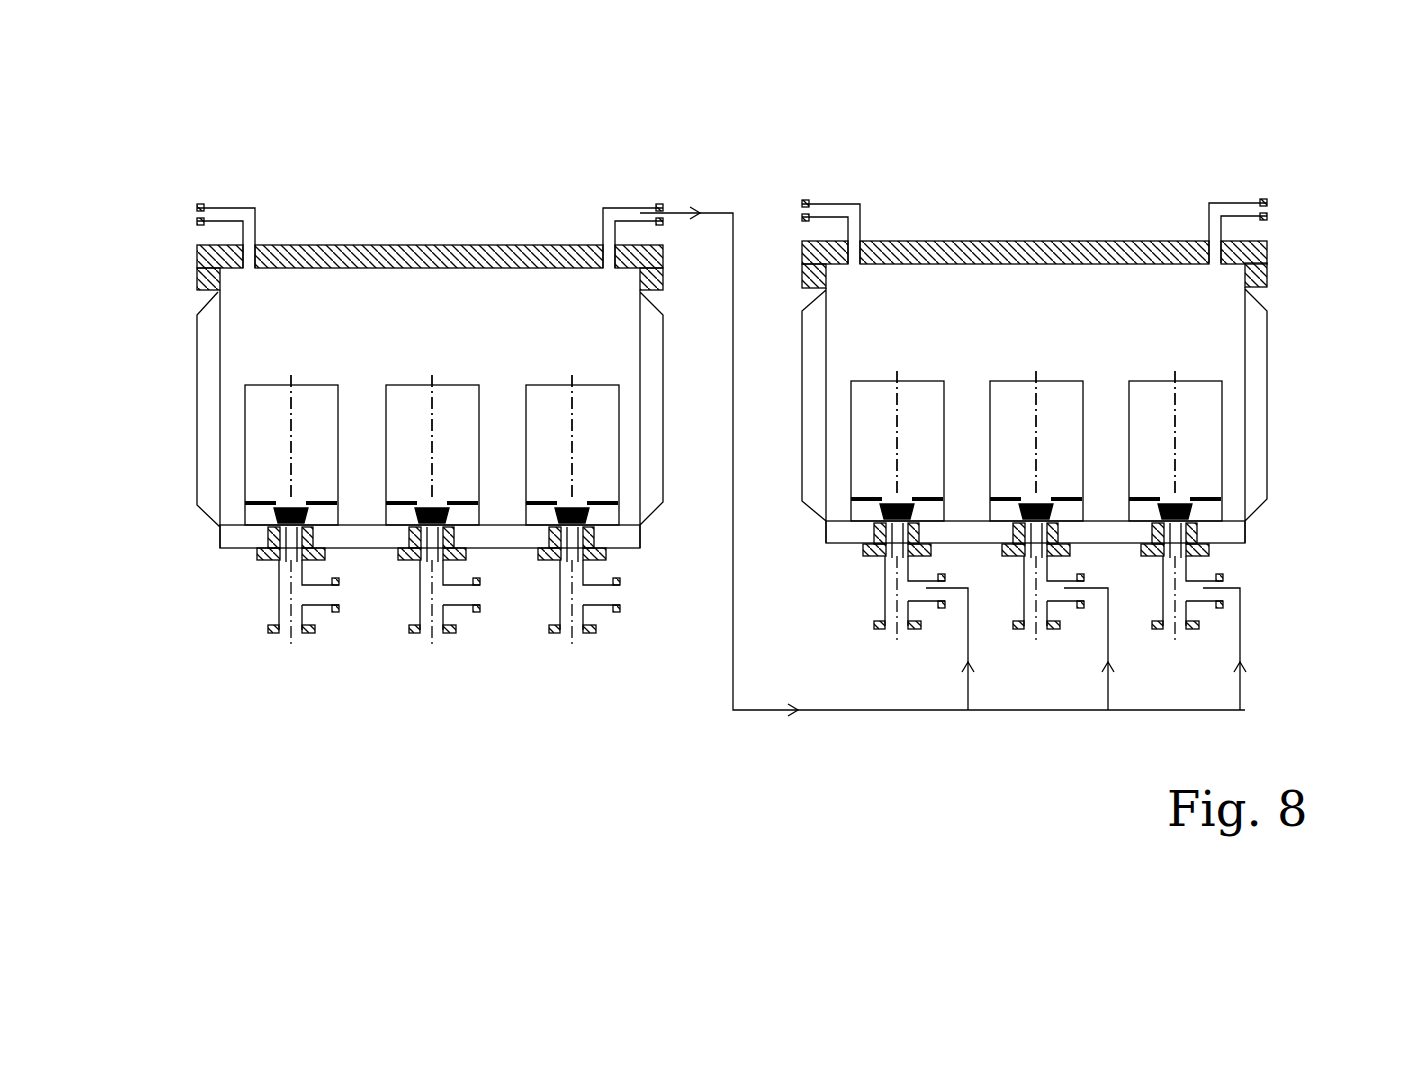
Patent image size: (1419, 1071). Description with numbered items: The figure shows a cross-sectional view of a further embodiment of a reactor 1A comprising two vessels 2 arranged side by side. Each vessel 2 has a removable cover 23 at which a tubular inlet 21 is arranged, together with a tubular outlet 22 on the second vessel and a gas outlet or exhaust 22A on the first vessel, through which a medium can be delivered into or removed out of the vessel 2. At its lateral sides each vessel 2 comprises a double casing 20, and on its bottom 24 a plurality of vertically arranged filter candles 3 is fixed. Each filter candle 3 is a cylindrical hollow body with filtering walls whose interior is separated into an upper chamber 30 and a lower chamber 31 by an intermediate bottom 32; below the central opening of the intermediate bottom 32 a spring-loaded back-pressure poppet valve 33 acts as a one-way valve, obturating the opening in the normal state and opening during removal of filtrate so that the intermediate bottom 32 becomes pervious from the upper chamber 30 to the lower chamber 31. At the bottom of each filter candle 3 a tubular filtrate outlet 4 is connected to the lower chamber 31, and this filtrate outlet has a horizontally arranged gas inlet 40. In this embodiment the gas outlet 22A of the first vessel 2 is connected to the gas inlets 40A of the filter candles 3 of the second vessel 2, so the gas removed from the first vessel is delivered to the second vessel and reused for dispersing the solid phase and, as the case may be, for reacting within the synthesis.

The reactor 1A is at (167, 250).
The vessel 2 is at (683, 419).
The filter candle 3 is at (238, 417).
The filtrate outlet 4 is at (878, 590).
The double casing 20 is at (210, 463).
The tubular inlet 21 is at (225, 215).
The tubular outlet 22 is at (1225, 203).
The gas outlet 22A is at (612, 206).
The removable cover 23 is at (337, 245).
The bottom 24 is at (372, 537).
The upper chamber 30 is at (260, 478).
The lower chamber 31 is at (258, 518).
The intermediate bottom 32 is at (258, 505).
The spring-loaded back-pressure poppet valve 33 is at (278, 568).
The gas inlet 40 is at (458, 590).
The gas inlet 40A is at (1200, 582).